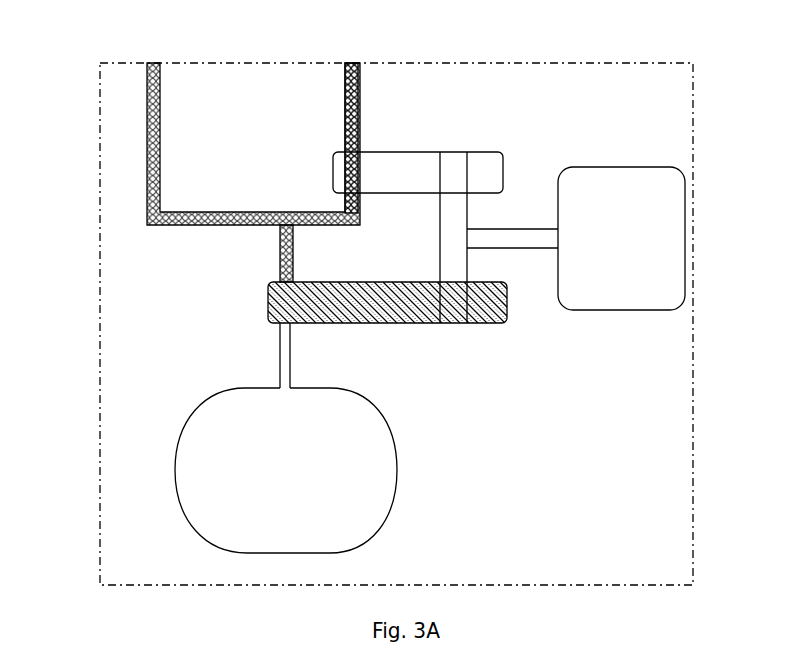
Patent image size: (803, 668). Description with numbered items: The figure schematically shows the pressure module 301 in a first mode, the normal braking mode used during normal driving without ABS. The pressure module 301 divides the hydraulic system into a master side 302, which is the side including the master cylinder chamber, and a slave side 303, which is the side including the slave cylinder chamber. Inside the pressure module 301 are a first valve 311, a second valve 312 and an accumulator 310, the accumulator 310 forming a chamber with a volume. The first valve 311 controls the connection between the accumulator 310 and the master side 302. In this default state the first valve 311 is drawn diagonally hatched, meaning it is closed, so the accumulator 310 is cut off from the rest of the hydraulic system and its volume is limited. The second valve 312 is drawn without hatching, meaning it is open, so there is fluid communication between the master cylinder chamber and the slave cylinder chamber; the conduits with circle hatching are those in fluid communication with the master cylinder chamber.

The pressure module 301 is at (693, 82).
The master side 302 is at (147, 136).
The slave side 303 is at (355, 90).
The accumulator 310 is at (178, 458).
The first valve 311 is at (508, 317).
The second valve 312 is at (415, 165).